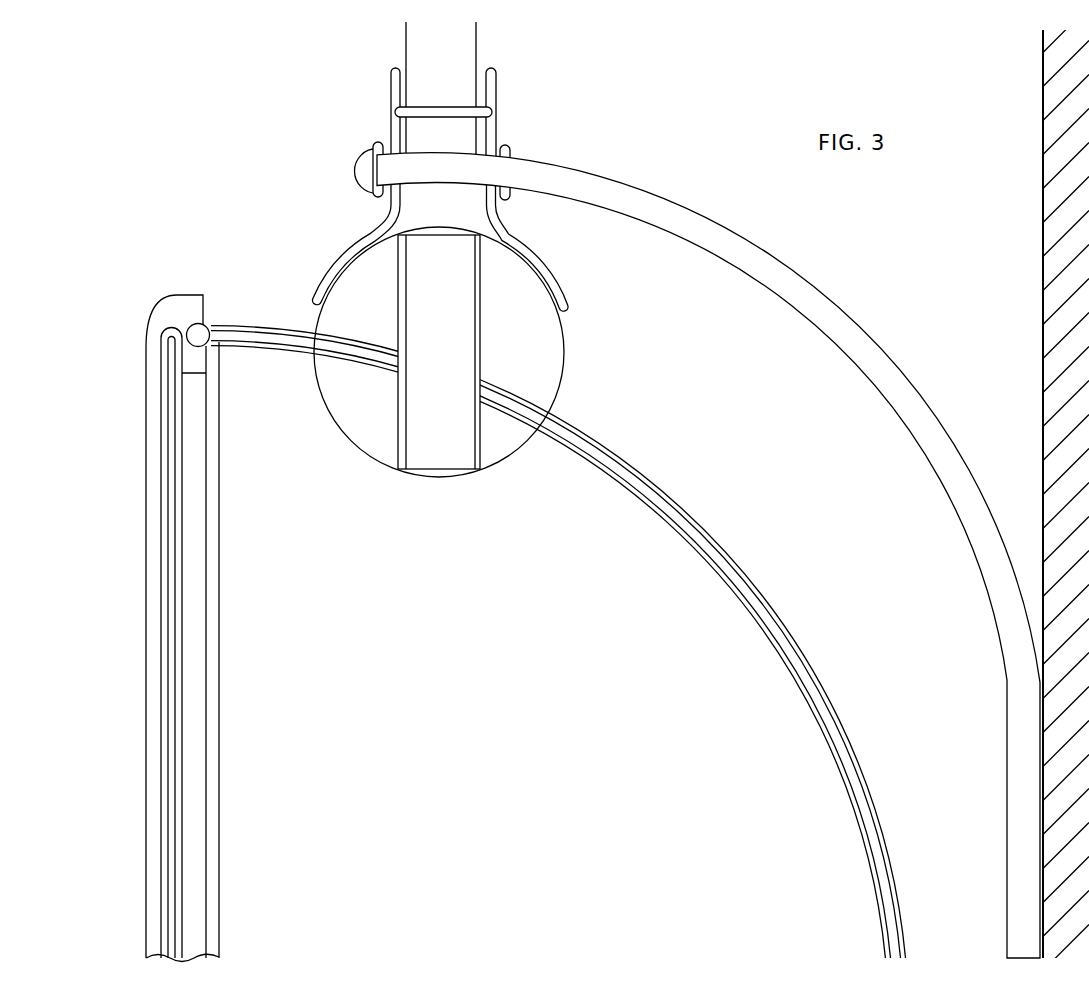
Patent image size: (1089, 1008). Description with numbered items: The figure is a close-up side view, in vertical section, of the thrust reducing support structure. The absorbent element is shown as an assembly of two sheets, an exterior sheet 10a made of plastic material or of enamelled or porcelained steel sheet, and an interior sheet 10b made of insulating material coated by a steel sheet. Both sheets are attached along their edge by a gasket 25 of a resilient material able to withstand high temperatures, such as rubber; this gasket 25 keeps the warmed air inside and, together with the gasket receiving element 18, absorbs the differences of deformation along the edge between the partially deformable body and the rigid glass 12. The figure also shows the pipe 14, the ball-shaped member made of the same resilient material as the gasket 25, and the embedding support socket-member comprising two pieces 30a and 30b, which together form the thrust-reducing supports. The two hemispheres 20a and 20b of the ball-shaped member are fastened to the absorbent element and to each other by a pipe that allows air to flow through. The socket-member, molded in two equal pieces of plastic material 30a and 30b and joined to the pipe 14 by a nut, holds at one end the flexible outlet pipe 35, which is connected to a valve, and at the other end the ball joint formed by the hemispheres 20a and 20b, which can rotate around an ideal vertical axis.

The exterior sheet 10a is at (657, 483).
The interior sheet 10b is at (694, 540).
The glass 12 is at (173, 587).
The pipe 14 is at (695, 228).
The gasket receiving element 18 is at (173, 315).
The hemisphere 20a is at (552, 359).
The hemisphere 20b is at (503, 437).
The gasket 25 is at (204, 324).
The socket-member piece 30a is at (388, 228).
The socket-member piece 30b is at (497, 218).
The flexible outlet pipe 35 is at (467, 66).